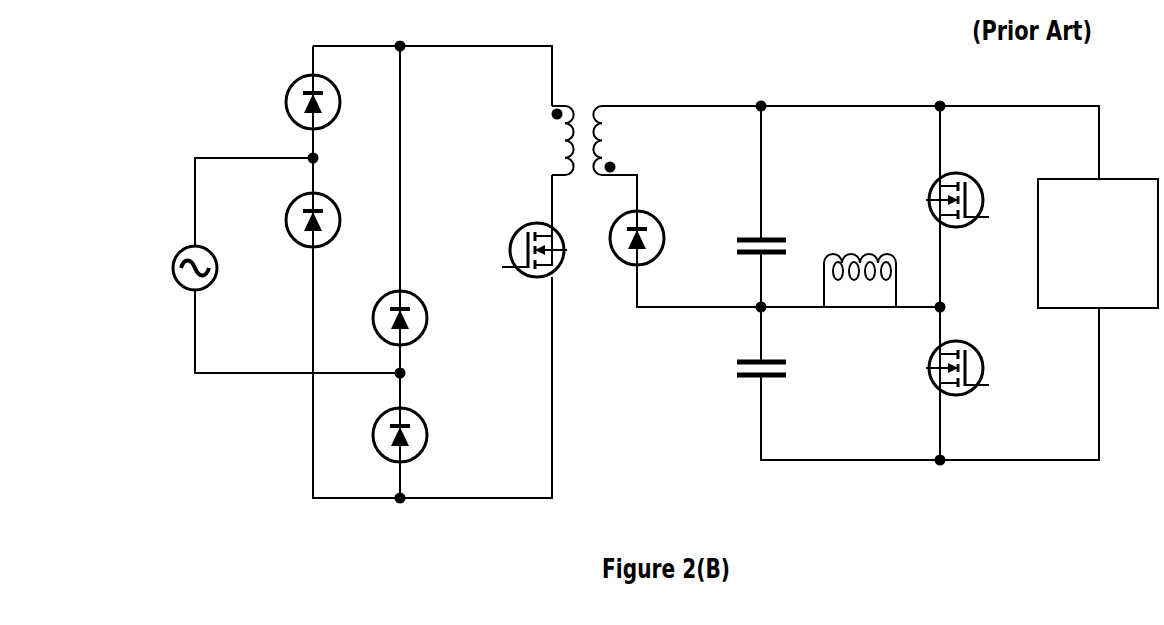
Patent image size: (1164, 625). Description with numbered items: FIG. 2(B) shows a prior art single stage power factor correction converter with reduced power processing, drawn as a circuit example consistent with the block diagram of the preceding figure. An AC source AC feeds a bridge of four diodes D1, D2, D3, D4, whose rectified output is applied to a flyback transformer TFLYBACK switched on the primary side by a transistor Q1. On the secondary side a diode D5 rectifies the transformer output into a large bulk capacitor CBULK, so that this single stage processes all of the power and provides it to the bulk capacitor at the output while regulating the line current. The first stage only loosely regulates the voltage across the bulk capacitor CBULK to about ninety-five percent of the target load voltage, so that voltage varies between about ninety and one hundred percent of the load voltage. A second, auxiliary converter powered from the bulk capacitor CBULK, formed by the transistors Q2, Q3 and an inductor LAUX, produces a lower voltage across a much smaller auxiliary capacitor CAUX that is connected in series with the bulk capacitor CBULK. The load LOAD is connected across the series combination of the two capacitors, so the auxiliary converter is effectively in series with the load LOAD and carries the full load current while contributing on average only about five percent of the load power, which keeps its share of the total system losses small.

The AC input source AC is at (181, 268).
The bridge rectifier diode D1 is at (328, 102).
The bridge rectifier diode D2 is at (328, 220).
The bridge rectifier diode D3 is at (415, 318).
The bridge rectifier diode D4 is at (415, 435).
The flyback output diode D5 is at (651, 238).
The flyback switching transistor Q1 is at (534, 237).
The high-side switch transistor Q2 is at (957, 186).
The low-side switch transistor Q3 is at (957, 354).
The flyback transformer TFLYBACK is at (585, 118).
The bulk capacitor CBULK is at (746, 232).
The auxiliary capacitor CAUX is at (736, 373).
The auxiliary inductor LAUX is at (860, 263).
The load LOAD is at (1098, 243).